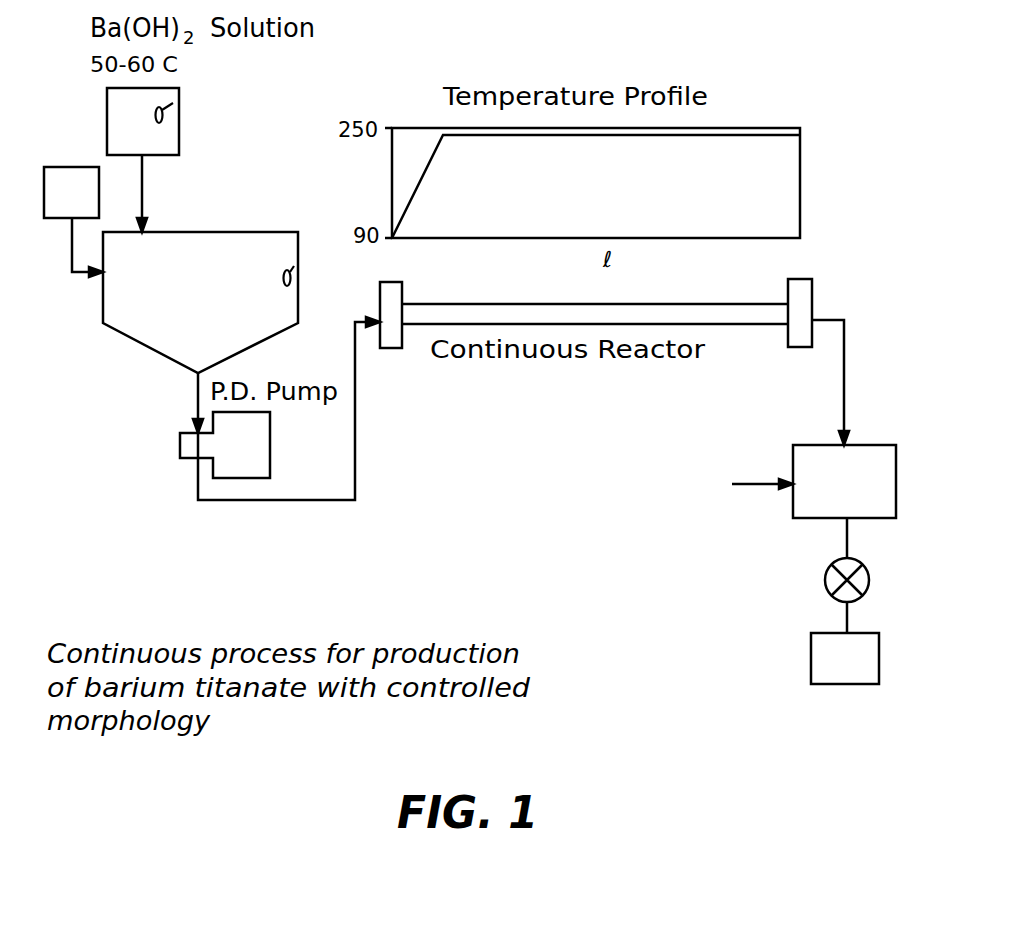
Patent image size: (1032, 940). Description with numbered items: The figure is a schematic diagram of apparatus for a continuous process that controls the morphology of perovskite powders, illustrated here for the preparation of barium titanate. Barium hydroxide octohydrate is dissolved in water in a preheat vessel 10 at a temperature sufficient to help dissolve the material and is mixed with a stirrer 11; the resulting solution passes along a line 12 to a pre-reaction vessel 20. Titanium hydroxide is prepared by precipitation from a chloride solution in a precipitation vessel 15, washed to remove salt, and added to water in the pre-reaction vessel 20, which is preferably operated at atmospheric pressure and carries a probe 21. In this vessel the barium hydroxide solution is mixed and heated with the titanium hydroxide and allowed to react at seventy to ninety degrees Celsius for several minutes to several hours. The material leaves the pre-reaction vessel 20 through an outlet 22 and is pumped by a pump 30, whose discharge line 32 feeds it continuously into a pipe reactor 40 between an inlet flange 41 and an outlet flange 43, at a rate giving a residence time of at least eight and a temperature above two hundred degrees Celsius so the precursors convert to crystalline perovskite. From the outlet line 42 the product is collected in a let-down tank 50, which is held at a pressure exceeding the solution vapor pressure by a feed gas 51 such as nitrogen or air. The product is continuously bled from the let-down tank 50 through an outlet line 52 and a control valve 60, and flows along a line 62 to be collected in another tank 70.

The preheat vessel 10 is at (179, 133).
The stirrer 11 is at (173, 103).
The feed line from solution tank to pre-reaction vessel 12 is at (145, 193).
The precipitation vessel 15 is at (83, 201).
The pre-reaction vessel 20 is at (228, 232).
The temperature probe of pre-reaction vessel 21 is at (292, 270).
The outlet line from pre-reaction vessel to pump 22 is at (198, 400).
The pump 30 is at (255, 456).
The pump discharge line to continuous reactor 32 is at (355, 468).
The pipe reactor 40 is at (597, 304).
The reactor inlet flange 41 is at (380, 313).
The reactor outlet line to vessel 50 42 is at (844, 407).
The reactor outlet flange 43 is at (812, 318).
The let-down tank 50 is at (862, 499).
The feed gas 51 is at (763, 480).
The outlet line from vessel 50 to valve 52 is at (847, 553).
The control valve 60 is at (825, 580).
The line from valve to collection vessel 62 is at (847, 615).
The tank 70 is at (860, 673).